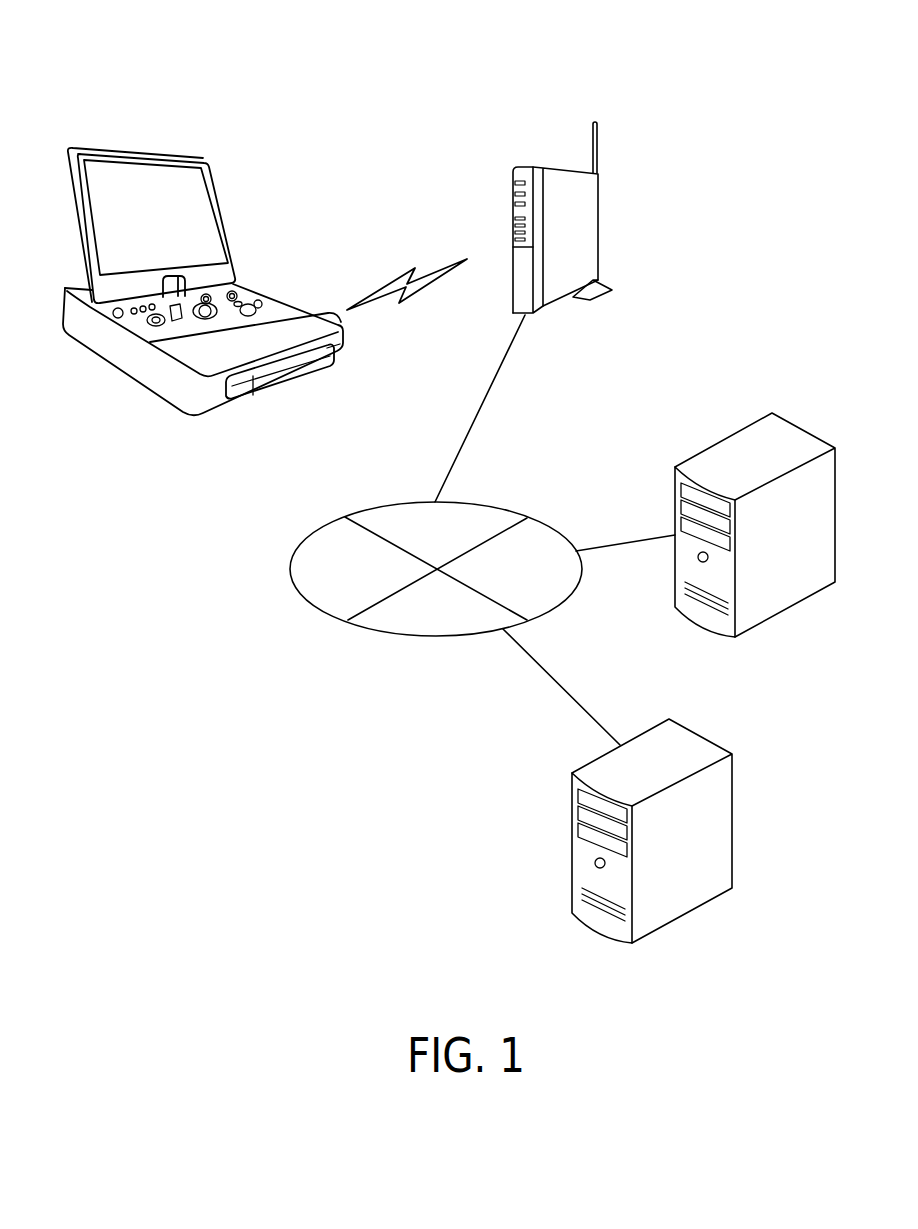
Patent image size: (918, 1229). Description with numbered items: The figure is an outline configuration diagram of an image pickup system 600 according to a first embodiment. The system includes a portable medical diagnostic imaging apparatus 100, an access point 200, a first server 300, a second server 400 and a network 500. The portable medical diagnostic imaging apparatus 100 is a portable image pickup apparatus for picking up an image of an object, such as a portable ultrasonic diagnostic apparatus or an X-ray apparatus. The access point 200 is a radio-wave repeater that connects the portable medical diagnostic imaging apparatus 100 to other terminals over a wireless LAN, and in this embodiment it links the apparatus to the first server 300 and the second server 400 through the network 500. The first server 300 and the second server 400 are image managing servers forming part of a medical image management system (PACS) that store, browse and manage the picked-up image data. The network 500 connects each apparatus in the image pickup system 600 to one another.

The portable medical diagnostic imaging apparatus 100 is at (138, 150).
The access point 200 is at (560, 167).
The first server 300 is at (803, 428).
The second server 400 is at (700, 733).
The network 500 is at (508, 507).
The image pickup system 600 is at (458, 84).